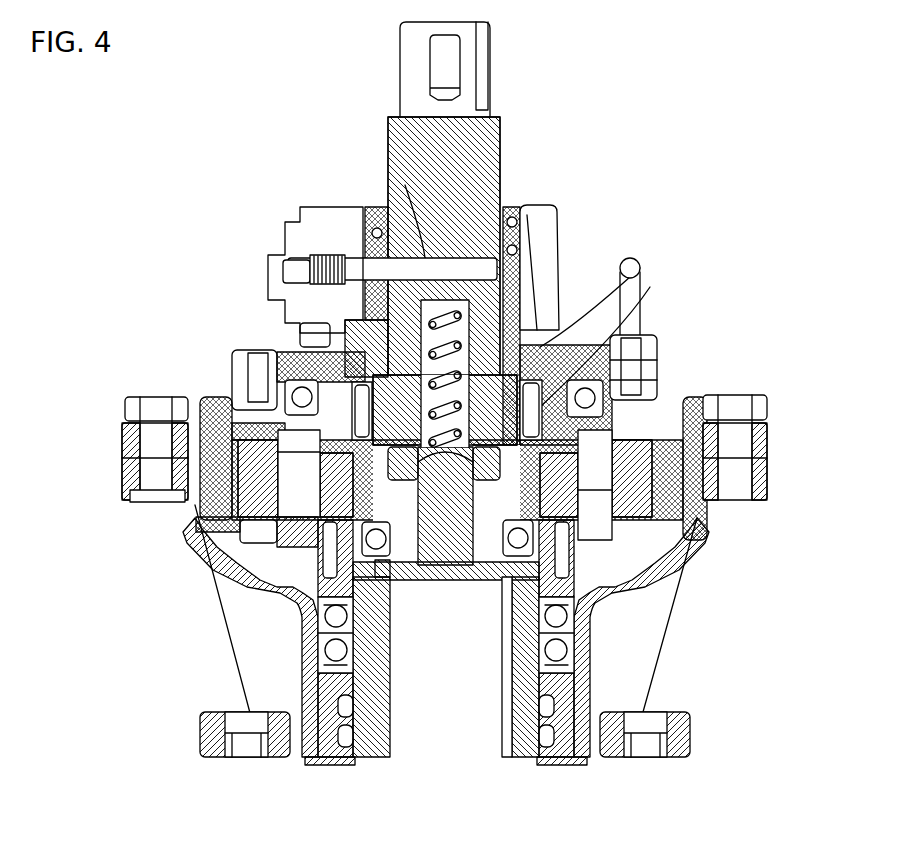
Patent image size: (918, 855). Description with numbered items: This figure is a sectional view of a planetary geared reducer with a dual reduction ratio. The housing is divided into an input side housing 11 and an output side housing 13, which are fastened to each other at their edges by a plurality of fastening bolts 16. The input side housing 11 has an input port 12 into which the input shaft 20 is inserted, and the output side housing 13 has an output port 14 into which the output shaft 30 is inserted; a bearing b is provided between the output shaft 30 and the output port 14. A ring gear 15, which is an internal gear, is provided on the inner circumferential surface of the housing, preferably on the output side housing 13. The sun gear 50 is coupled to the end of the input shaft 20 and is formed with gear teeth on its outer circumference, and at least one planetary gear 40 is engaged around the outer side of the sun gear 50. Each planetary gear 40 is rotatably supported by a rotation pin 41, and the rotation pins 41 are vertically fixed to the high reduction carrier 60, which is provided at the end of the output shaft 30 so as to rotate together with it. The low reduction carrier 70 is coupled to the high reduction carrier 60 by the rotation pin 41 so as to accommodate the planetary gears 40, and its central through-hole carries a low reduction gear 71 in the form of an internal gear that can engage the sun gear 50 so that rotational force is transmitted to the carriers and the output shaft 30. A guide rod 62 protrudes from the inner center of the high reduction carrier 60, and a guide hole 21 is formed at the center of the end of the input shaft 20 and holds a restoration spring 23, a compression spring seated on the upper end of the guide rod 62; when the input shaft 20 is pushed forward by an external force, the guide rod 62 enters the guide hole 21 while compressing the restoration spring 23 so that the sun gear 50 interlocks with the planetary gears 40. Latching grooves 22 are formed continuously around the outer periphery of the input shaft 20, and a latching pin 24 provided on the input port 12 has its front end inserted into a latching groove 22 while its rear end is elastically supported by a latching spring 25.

The input side housing 11 is at (213, 398).
The input port 12 is at (545, 208).
The output side housing 13 is at (205, 540).
The output port 14 is at (323, 667).
The ring gear 15 is at (215, 452).
The fastening bolts 16 is at (157, 502).
The input shaft 20 is at (408, 128).
The guide hole 21 is at (478, 352).
The latching grooves 22 is at (430, 280).
The restoration spring 23 is at (482, 318).
The latching pin 24 is at (388, 265).
The latching spring 25 is at (300, 265).
The output shaft 30 is at (377, 730).
The planetary gear 40 is at (255, 490).
The rotation pin 41 is at (295, 535).
The sun gear 50 is at (545, 385).
The high reduction carrier 60 is at (700, 540).
The guide rod 62 is at (455, 548).
The low reduction carrier 70 is at (660, 363).
The low reduction gear 71 is at (357, 382).
The bearing b is at (353, 393).